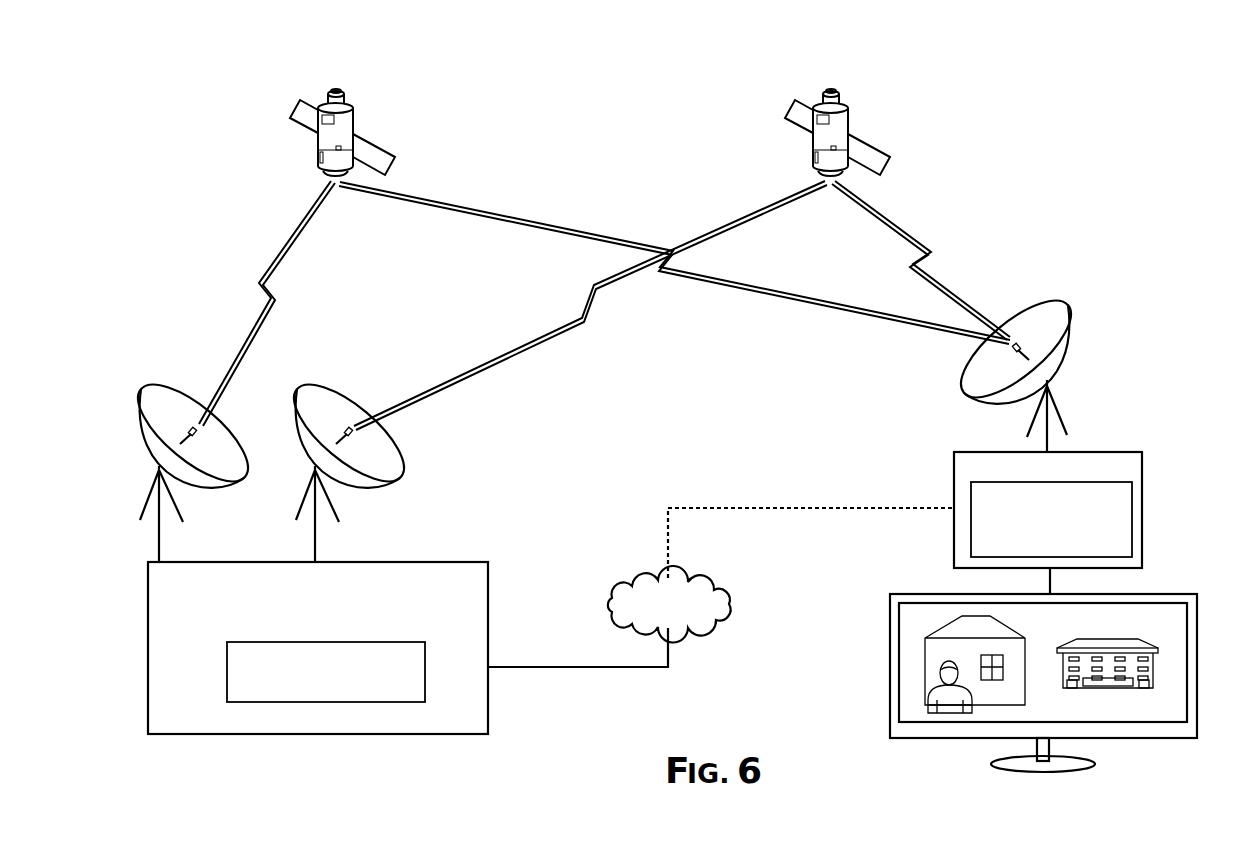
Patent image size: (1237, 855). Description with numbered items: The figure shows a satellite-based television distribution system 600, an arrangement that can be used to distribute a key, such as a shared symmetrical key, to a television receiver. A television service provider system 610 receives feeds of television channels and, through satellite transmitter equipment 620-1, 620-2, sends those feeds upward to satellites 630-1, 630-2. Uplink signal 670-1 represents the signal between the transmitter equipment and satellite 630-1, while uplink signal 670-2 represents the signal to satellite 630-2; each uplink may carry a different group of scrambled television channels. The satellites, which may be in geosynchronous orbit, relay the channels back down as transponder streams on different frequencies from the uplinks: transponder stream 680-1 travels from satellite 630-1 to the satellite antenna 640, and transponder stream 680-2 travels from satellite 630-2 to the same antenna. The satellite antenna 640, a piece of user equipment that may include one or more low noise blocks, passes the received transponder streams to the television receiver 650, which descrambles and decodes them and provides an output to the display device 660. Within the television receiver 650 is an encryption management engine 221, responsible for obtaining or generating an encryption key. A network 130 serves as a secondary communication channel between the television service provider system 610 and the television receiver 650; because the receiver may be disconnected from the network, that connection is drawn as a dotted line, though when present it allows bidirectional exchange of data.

The satellite-based television distribution system 600 is at (163, 90).
The television service provider system 610 is at (479, 563).
The satellite transmitter equipment 620-1 is at (152, 389).
The satellite transmitter equipment 620-2 is at (307, 389).
The satellite 630-1 is at (330, 95).
The satellite 630-2 is at (844, 132).
The satellite antenna 640 is at (1047, 308).
The television receiver 650 is at (1048, 491).
The display device 660 is at (1164, 594).
The uplink signal 670-1 is at (296, 251).
The uplink signal 670-2 is at (715, 238).
The transponder stream 680-1 is at (474, 204).
The transponder stream 680-2 is at (917, 239).
The network 130 is at (618, 588).
The encryption management engine 221 is at (1051, 519).